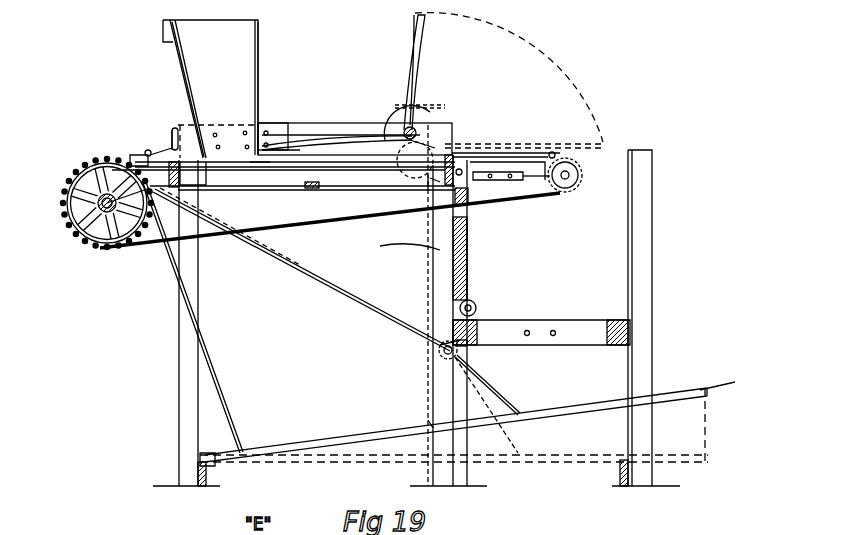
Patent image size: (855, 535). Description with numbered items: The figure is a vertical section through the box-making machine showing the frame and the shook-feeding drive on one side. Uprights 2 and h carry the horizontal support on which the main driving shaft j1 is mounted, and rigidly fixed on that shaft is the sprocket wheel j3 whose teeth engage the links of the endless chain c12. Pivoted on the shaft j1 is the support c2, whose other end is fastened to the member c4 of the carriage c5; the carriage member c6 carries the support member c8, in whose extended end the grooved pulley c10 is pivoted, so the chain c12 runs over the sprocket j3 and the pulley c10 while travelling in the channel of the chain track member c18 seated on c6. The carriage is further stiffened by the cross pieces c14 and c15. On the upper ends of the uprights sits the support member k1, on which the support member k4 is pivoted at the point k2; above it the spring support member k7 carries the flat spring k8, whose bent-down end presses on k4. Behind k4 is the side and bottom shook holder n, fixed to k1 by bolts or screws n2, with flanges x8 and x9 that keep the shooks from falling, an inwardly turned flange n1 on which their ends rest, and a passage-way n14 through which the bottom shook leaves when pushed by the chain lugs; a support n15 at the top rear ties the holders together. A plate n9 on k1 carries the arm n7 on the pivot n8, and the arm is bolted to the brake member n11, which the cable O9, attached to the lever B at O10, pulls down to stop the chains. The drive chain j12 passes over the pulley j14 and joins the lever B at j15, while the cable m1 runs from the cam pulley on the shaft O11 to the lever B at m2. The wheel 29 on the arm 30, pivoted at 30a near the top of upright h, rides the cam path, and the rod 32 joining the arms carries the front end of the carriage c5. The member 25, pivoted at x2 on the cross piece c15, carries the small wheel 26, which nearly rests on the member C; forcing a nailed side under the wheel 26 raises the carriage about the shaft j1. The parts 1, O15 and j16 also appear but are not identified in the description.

The side and bottom shook holder n is at (230, 42).
The support n15 is at (165, 32).
The flange x9 is at (178, 68).
The flange x8 is at (260, 78).
The bolts or screws n2 is at (244, 145).
The brake member n11 is at (170, 152).
The arm n7 is at (158, 150).
The pivot n8 is at (150, 150).
The plate n9 is at (174, 130).
The support member k1 is at (340, 120).
The spring support member k7 is at (266, 132).
The flat spring member k8 is at (300, 134).
The support member k4 is at (360, 138).
The pivot point k2 is at (290, 155).
The carriage member c4 is at (178, 172).
The inwardly turned flange n1 is at (238, 167).
The passage-way n14 is at (262, 167).
The carriage c5 is at (275, 190).
The cross piece c14 is at (318, 190).
The support c2 is at (132, 158).
The sprocket wheel j3 is at (72, 178).
The main driving shaft j1 is at (70, 232).
The endless chain c12 is at (338, 226).
The grooved pulley c10 is at (583, 175).
The chain track member c18 is at (553, 152).
The carriage member c6 is at (510, 183).
The support member c8 is at (552, 180).
The cross piece c15 is at (462, 170).
The rod 32 is at (462, 170).
The shaft O11 is at (405, 140).
The swinging arm O15 is at (425, 85).
The wheel 29 is at (405, 155).
The arm 30 is at (410, 170).
The pivot 30a is at (440, 183).
The pivot point x2 is at (450, 212).
The cable m1 is at (430, 272).
The upright h is at (406, 254).
The member 25 is at (470, 258).
The small wheel 26 is at (476, 305).
The member C is at (478, 318).
The rear upright 1 is at (645, 288).
The upright 2 is at (183, 381).
The cable O9 is at (215, 357).
The drive chain j12 is at (292, 255).
The pulley j14 is at (440, 352).
The pivot block j16 is at (470, 345).
The attachment point j15 is at (525, 410).
The attachment point O10 is at (215, 455).
The lever B is at (722, 383).
The attachment point m2 is at (430, 425).